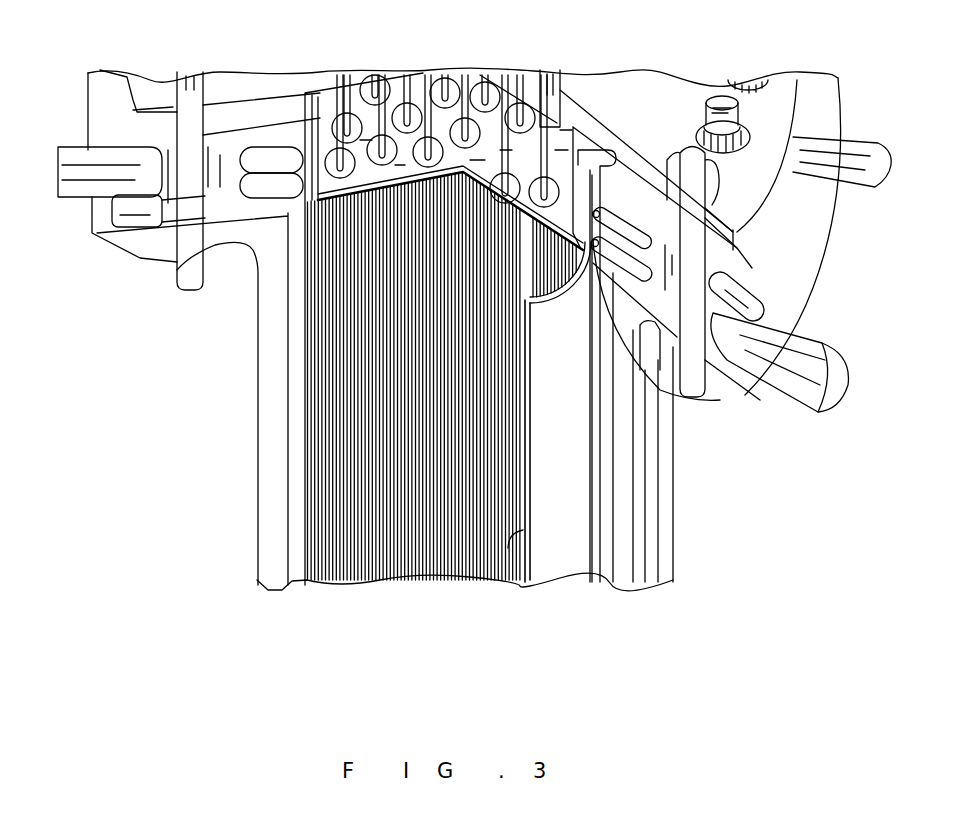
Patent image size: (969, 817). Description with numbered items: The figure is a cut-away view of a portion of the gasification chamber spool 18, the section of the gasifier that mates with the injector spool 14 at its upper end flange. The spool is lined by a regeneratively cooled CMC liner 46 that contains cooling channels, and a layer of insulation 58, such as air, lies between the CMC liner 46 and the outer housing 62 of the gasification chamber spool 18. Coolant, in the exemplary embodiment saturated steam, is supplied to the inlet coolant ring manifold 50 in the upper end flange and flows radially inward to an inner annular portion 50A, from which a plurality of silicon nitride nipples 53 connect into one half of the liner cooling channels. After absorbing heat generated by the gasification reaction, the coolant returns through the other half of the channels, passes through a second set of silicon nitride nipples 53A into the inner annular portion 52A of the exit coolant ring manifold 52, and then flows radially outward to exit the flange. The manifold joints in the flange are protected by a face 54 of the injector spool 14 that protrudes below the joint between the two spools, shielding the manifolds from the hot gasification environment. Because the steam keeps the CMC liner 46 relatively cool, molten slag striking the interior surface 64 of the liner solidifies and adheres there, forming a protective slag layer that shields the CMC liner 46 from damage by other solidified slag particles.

The injector spool 14 is at (752, 133).
The gasification chamber spool 18 is at (677, 487).
The CMC liner 46 is at (570, 557).
The inlet coolant ring manifold 50 is at (130, 210).
The inner annular portion of the inlet ring manifold 50A is at (258, 272).
The exit coolant ring manifold 52 is at (80, 178).
The inner annular portion of the exit ring manifold 52A is at (637, 235).
The silicon nitride nipples 53 is at (637, 358).
The silicon nitride nipples 53A is at (620, 212).
The face of the injector spool 54 is at (337, 255).
The layer of insulation 58 is at (595, 547).
The outer housing 62 is at (665, 450).
The interior surface of the CMC liner 64 is at (508, 548).